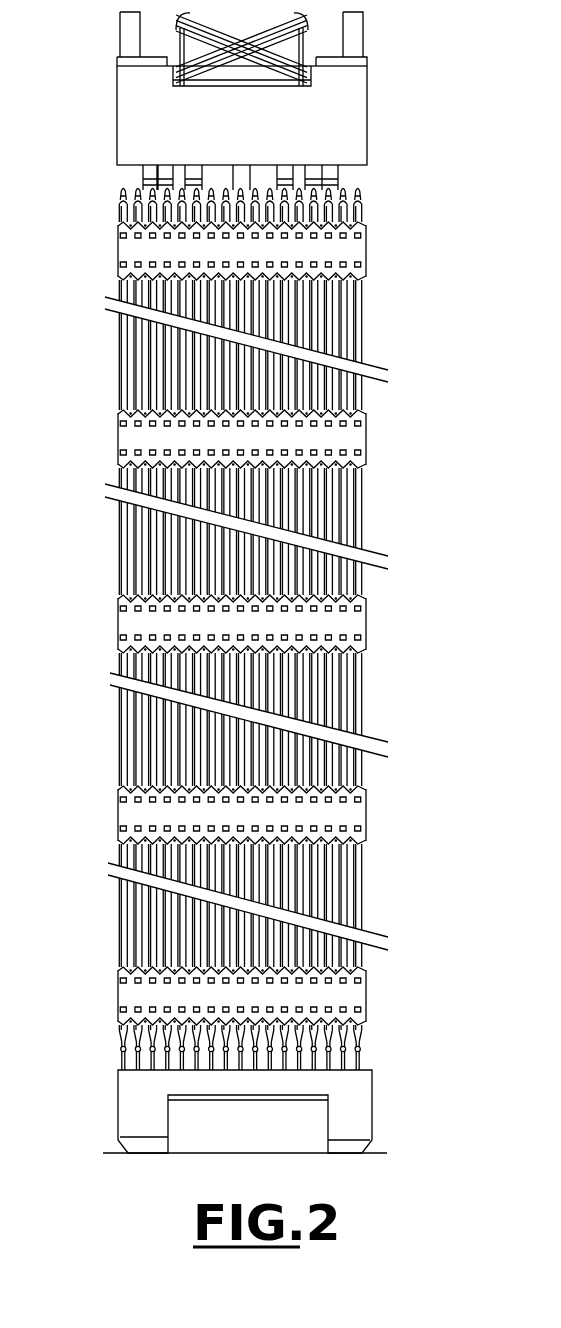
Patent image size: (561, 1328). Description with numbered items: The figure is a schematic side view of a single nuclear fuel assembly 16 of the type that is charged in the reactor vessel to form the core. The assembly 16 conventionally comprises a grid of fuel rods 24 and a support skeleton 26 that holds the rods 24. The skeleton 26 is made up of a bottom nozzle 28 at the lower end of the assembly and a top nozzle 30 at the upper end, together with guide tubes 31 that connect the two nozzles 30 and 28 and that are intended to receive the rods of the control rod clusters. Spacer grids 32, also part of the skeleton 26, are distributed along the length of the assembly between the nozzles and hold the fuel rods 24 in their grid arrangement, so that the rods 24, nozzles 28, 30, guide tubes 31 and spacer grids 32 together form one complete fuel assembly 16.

The nuclear fuel assembly 16 is at (261, 608).
The fuel rods 24 is at (240, 869).
The support skeleton 26 is at (251, 101).
The bottom nozzle 28 is at (348, 1130).
The top nozzle 30 is at (130, 133).
The guide tubes 31 is at (157, 1062).
The spacer grids 32 is at (123, 620).